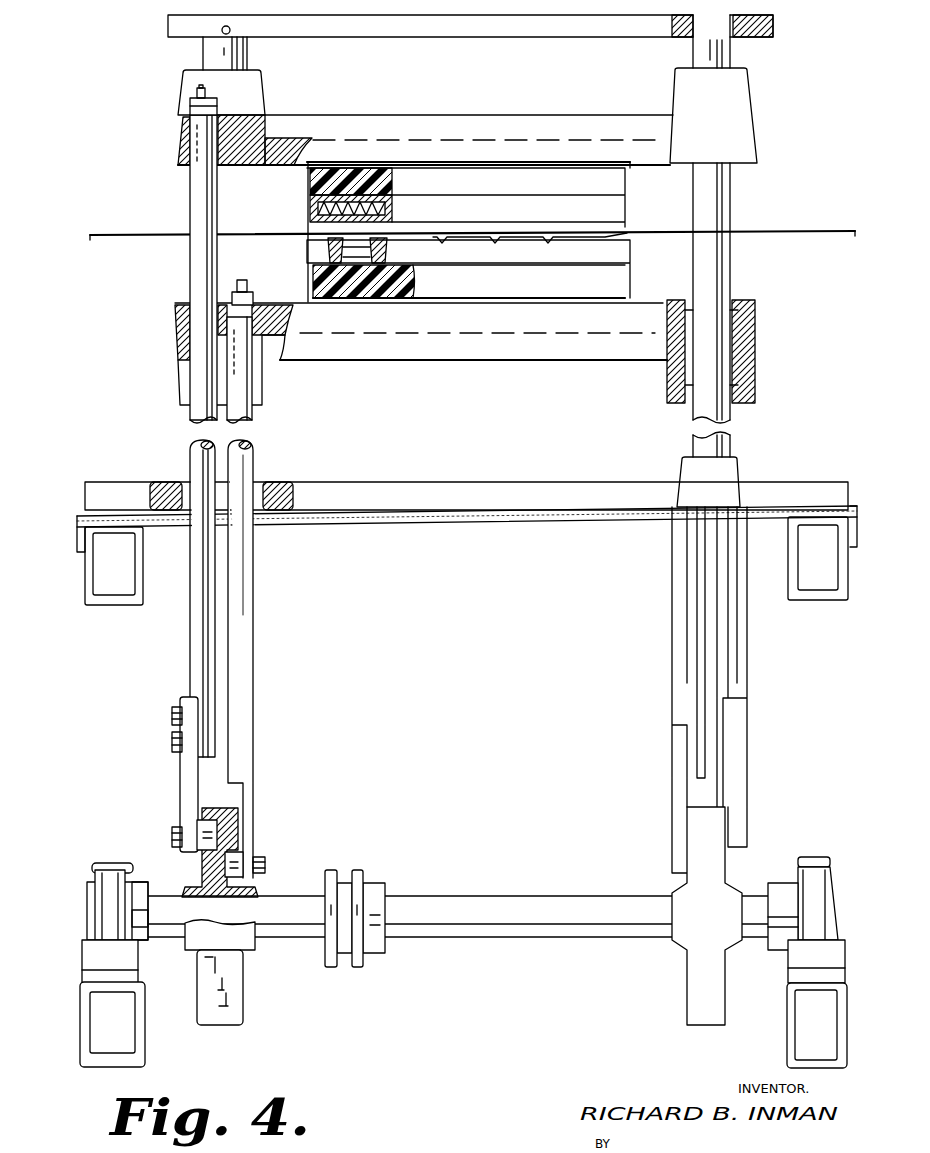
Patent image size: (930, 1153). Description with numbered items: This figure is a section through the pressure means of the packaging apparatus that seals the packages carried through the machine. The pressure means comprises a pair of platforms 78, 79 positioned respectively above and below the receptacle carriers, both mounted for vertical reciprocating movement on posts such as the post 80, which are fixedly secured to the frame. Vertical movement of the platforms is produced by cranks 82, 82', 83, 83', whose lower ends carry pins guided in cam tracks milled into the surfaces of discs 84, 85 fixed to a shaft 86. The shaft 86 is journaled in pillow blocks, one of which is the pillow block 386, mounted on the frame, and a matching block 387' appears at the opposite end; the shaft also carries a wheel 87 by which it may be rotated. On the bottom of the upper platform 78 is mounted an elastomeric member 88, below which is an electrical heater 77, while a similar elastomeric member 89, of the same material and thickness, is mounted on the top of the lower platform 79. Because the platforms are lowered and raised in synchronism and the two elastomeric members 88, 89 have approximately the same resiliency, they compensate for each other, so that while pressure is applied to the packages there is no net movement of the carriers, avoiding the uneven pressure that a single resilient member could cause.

The electrical heater 77 is at (622, 216).
The platform 78 is at (290, 136).
The platform 79 is at (283, 338).
The post 80 is at (727, 63).
The crank 82 is at (179, 468).
The crank 83 is at (263, 579).
The crank 82' is at (760, 677).
The crank 83' is at (656, 690).
The disc 84 is at (237, 979).
The disc 85 is at (690, 991).
The shaft 86 is at (470, 905).
The wheel 87 is at (360, 882).
The elastomeric member 88 is at (310, 183).
The elastomeric member 89 is at (311, 276).
The pillow block 386 is at (130, 849).
The roller 387' is at (807, 949).